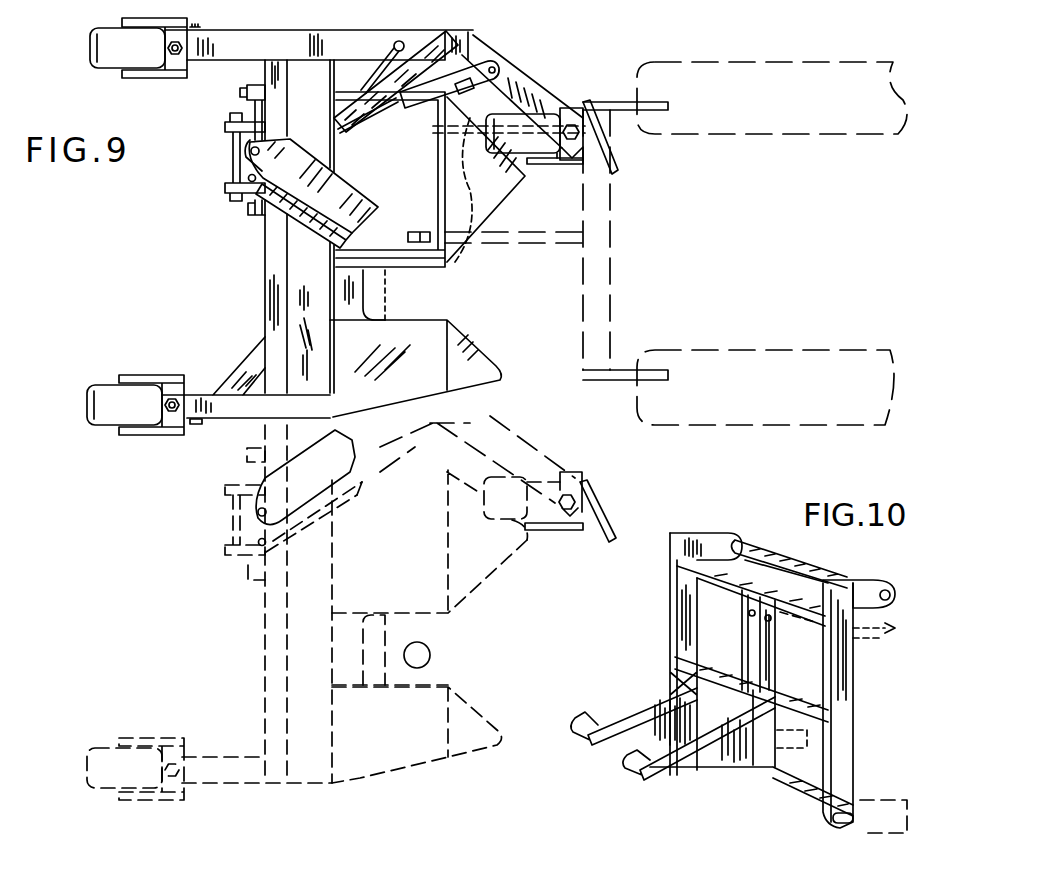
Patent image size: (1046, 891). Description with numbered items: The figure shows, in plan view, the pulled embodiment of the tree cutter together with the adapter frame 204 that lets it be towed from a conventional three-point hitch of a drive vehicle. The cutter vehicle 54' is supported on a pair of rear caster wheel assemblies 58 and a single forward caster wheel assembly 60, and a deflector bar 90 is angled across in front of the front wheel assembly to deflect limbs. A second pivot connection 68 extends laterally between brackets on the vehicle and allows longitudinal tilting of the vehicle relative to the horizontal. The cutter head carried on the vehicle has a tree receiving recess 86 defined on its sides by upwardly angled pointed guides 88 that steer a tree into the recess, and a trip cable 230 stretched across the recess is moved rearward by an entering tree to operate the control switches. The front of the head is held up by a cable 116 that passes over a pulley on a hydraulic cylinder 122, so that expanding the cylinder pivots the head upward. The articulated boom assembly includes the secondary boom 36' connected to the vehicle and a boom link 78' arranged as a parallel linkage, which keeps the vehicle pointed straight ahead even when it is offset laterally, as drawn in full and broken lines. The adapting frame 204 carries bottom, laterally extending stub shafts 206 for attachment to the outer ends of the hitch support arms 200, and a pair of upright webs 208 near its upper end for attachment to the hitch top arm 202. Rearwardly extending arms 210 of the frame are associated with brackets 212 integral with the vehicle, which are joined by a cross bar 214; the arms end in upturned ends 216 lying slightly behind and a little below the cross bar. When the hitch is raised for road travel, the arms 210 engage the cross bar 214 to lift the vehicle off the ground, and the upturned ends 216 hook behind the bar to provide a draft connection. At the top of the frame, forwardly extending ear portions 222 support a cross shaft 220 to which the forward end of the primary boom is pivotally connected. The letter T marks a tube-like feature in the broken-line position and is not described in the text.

In FIG. 9, the secondary boom 36' is at (331, 332).
In FIG. 9, the cutter vehicle 54' is at (269, 226).
In FIG. 9, the rear caster wheel assemblies 58 is at (170, 80).
In FIG. 9, the forward caster wheel assembly 60 is at (560, 168).
In FIG. 9, the second pivot connection 68 is at (240, 205).
In FIG. 9, the boom link 78' is at (330, 368).
In FIG. 9, the tree receiving recess 86 is at (452, 297).
In FIG. 9, the pointed guides 88 is at (500, 190).
In FIG. 9, the deflector bar 90 is at (618, 158).
In FIG. 9, the cable 116 is at (347, 84).
In FIG. 9, the hydraulic cylinder 122 is at (348, 124).
In FIG. 10, the support arms 200 is at (900, 795).
In FIG. 10, the top arm 202 is at (870, 632).
In FIG. 9, the adapting frame 204 is at (612, 268).
In FIG. 10, the adapting frame 204 is at (705, 545).
In FIG. 10, the stub shafts 206 is at (893, 790).
In FIG. 10, the upright webs 208 is at (750, 642).
In FIG. 9, the rearwardly extending arms 210 is at (429, 388).
In FIG. 10, the rearwardly extending arms 210 is at (650, 700).
In FIG. 9, the brackets 212 is at (408, 230).
In FIG. 9, the cross bar 214 is at (437, 150).
In FIG. 10, the upturned ends 216 is at (598, 748).
In FIG. 10, the cross shaft 220 is at (780, 558).
In FIG. 10, the ear portions 222 is at (868, 598).
In FIG. 9, the trip cable 230 is at (393, 295).
In FIG. 9, the tube T is at (432, 655).